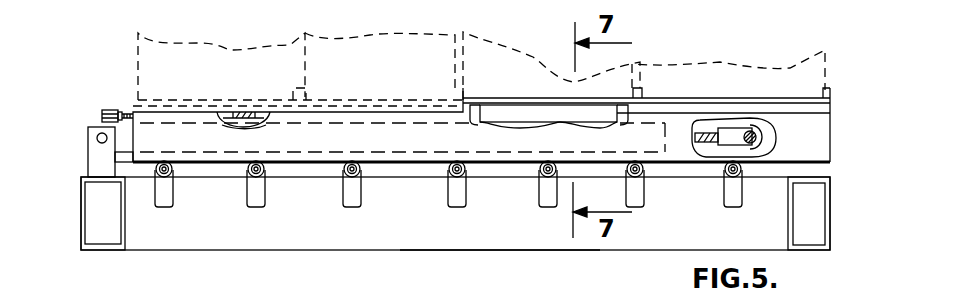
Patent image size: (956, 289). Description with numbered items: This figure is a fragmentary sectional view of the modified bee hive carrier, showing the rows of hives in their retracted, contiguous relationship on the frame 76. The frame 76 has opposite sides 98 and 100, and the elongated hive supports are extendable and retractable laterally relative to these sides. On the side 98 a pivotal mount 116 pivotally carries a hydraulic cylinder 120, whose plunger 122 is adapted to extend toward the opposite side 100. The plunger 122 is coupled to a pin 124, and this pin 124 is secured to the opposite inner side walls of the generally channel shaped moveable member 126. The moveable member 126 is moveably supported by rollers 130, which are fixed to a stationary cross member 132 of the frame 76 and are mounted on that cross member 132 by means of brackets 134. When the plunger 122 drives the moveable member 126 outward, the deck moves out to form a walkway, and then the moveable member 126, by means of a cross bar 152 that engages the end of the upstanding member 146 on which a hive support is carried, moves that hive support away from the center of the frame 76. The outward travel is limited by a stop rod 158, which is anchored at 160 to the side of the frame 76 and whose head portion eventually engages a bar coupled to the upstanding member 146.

The frame 76 is at (470, 250).
The side of the frame 98 is at (81, 192).
The side of the frame 100 is at (830, 210).
The pivotal mount 116 is at (88, 140).
The hydraulic cylinder 120 is at (132, 110).
The plunger 122 is at (683, 133).
The pin 124 is at (753, 132).
The moveable member 126 is at (305, 146).
The rollers 130 is at (448, 178).
The stationary cross member 132 is at (337, 243).
The brackets 134 is at (541, 197).
The upstanding member 146 is at (528, 110).
The cross bar 152 is at (238, 112).
The stop rod 158 is at (238, 130).
The anchor 160 is at (110, 110).